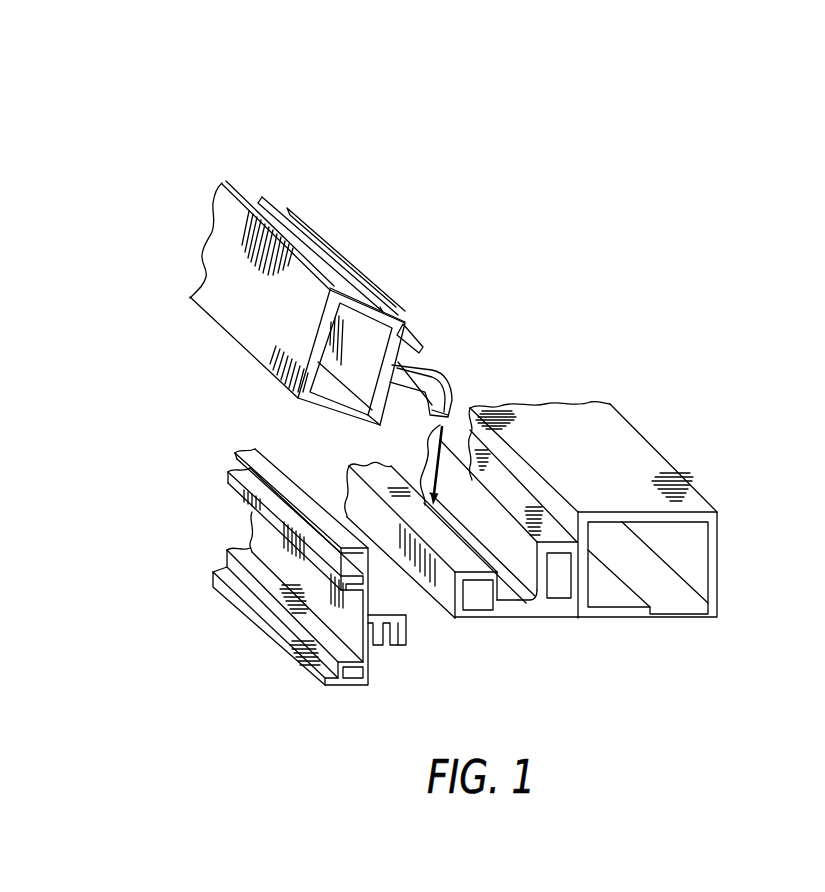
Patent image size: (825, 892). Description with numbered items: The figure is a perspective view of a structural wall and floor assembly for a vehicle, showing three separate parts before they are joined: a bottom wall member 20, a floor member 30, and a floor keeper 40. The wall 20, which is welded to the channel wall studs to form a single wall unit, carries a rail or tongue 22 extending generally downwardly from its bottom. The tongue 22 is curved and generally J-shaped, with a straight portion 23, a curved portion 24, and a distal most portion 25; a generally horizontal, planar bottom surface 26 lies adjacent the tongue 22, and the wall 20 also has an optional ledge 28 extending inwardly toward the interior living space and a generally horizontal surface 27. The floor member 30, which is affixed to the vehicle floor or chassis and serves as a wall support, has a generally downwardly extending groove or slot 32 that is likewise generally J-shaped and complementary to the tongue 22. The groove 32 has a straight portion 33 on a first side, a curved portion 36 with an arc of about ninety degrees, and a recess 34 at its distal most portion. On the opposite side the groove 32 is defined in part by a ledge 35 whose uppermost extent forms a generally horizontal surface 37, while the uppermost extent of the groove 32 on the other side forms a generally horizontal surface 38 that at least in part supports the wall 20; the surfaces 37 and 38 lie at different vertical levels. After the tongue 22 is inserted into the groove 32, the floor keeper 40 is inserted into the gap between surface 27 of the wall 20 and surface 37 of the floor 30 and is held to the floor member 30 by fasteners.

The bottom wall member 20 is at (218, 331).
The tongue 22 is at (438, 321).
The straight portion 23 is at (423, 346).
The curved portion 24 is at (458, 398).
The distal most portion 25 is at (427, 423).
The bottom surface 26 is at (408, 322).
The horizontal surface 27 is at (387, 418).
The ledge 28 is at (263, 197).
The floor member 30 is at (690, 625).
The groove 32 is at (508, 600).
The straight portion 33 is at (530, 600).
The recess 34 is at (508, 600).
The ledge 35 is at (490, 603).
The curved portion 36 is at (463, 527).
The horizontal surface 37 is at (366, 472).
The horizontal surface 38 is at (567, 600).
The floor keeper 40 is at (251, 632).